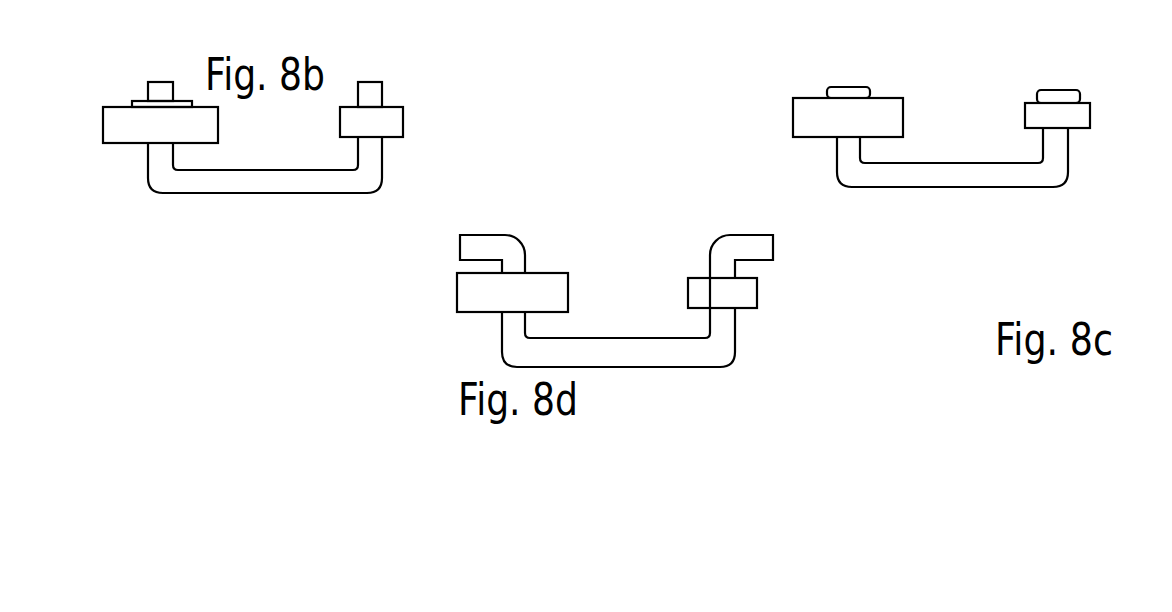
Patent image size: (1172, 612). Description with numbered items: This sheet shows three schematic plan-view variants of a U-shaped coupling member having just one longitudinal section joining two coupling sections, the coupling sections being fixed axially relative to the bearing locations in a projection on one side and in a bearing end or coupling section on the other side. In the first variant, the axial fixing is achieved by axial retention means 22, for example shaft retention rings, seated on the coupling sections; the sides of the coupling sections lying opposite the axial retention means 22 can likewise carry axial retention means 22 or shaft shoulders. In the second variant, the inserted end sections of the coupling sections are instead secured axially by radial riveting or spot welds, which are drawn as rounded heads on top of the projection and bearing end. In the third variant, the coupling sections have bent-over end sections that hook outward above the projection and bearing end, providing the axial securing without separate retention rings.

The axial retention means 22 is at (137, 100).